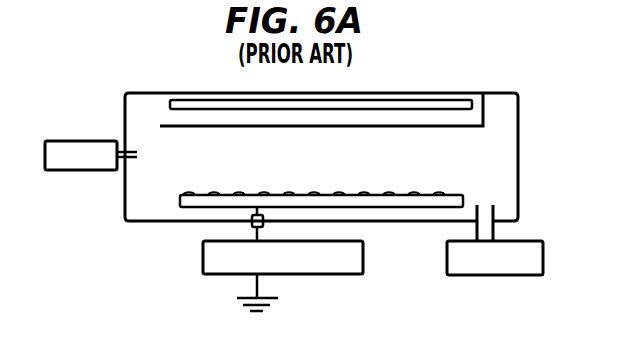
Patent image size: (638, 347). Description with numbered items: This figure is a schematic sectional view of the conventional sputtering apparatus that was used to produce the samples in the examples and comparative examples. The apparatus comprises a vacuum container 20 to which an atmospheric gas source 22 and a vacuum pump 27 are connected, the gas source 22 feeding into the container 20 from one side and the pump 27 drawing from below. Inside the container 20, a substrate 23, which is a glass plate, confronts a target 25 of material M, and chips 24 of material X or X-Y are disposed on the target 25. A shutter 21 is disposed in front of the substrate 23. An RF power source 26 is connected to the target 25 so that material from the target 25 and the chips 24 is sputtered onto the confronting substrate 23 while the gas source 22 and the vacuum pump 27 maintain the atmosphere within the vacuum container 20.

The vacuum container 20 is at (432, 91).
The shutter 21 is at (160, 126).
The atmospheric gas source 22 is at (76, 171).
The substrate 23 is at (472, 105).
The chips 24 is at (443, 193).
The target 25 is at (465, 201).
The RF power source 26 is at (337, 276).
The vacuum pump 27 is at (488, 277).